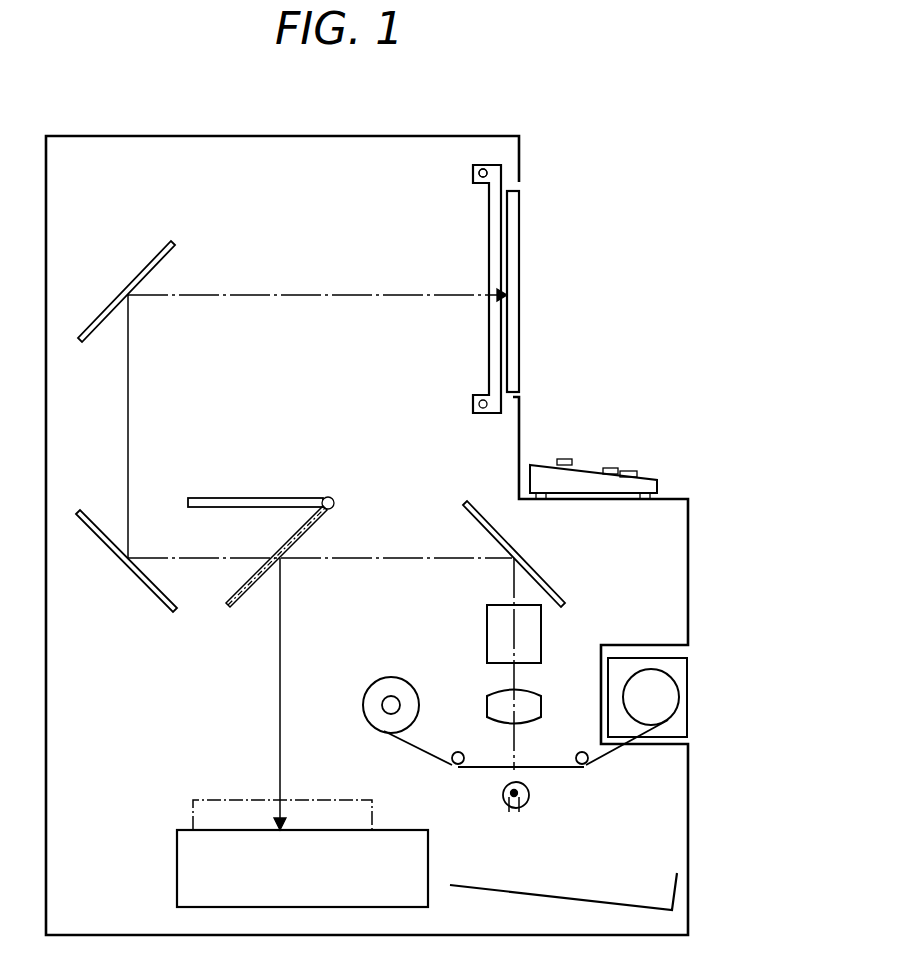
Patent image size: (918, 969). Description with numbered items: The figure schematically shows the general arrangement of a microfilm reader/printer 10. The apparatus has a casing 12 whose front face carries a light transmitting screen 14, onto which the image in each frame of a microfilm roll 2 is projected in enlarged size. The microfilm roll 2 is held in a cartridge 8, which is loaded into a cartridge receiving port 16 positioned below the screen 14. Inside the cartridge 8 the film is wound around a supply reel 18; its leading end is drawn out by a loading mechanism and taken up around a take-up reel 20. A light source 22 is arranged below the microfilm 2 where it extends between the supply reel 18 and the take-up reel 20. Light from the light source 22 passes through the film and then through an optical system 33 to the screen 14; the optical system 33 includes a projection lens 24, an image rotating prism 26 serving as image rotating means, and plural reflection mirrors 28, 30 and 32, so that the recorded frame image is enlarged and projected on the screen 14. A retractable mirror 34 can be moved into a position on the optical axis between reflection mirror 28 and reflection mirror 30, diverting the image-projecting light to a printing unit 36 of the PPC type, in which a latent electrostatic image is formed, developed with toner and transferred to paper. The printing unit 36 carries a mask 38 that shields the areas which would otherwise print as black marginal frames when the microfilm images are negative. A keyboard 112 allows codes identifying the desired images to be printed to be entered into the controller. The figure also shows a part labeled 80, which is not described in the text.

The reader/printer 10 is at (549, 136).
The casing 12 is at (467, 136).
The hinge pin 80 is at (493, 163).
The light transmitting screen 14 is at (522, 335).
The keyboard 112 is at (608, 463).
The reflection mirror 32 is at (172, 250).
The reflection mirror 30 is at (136, 600).
The retractable mirror 34 is at (293, 497).
The reflection mirror 28 is at (544, 590).
The optical system 33 is at (600, 592).
The image rotating prism 26 is at (541, 637).
The projection lens 24 is at (541, 709).
The take-up reel 20 is at (396, 696).
The microfilm roll 2 is at (614, 764).
The light source 22 is at (529, 798).
The cartridge receiving port 16 is at (698, 654).
The cartridge 8 is at (690, 680).
The supply reel 18 is at (679, 697).
The printing unit 36 is at (177, 858).
The mask 38 is at (252, 800).